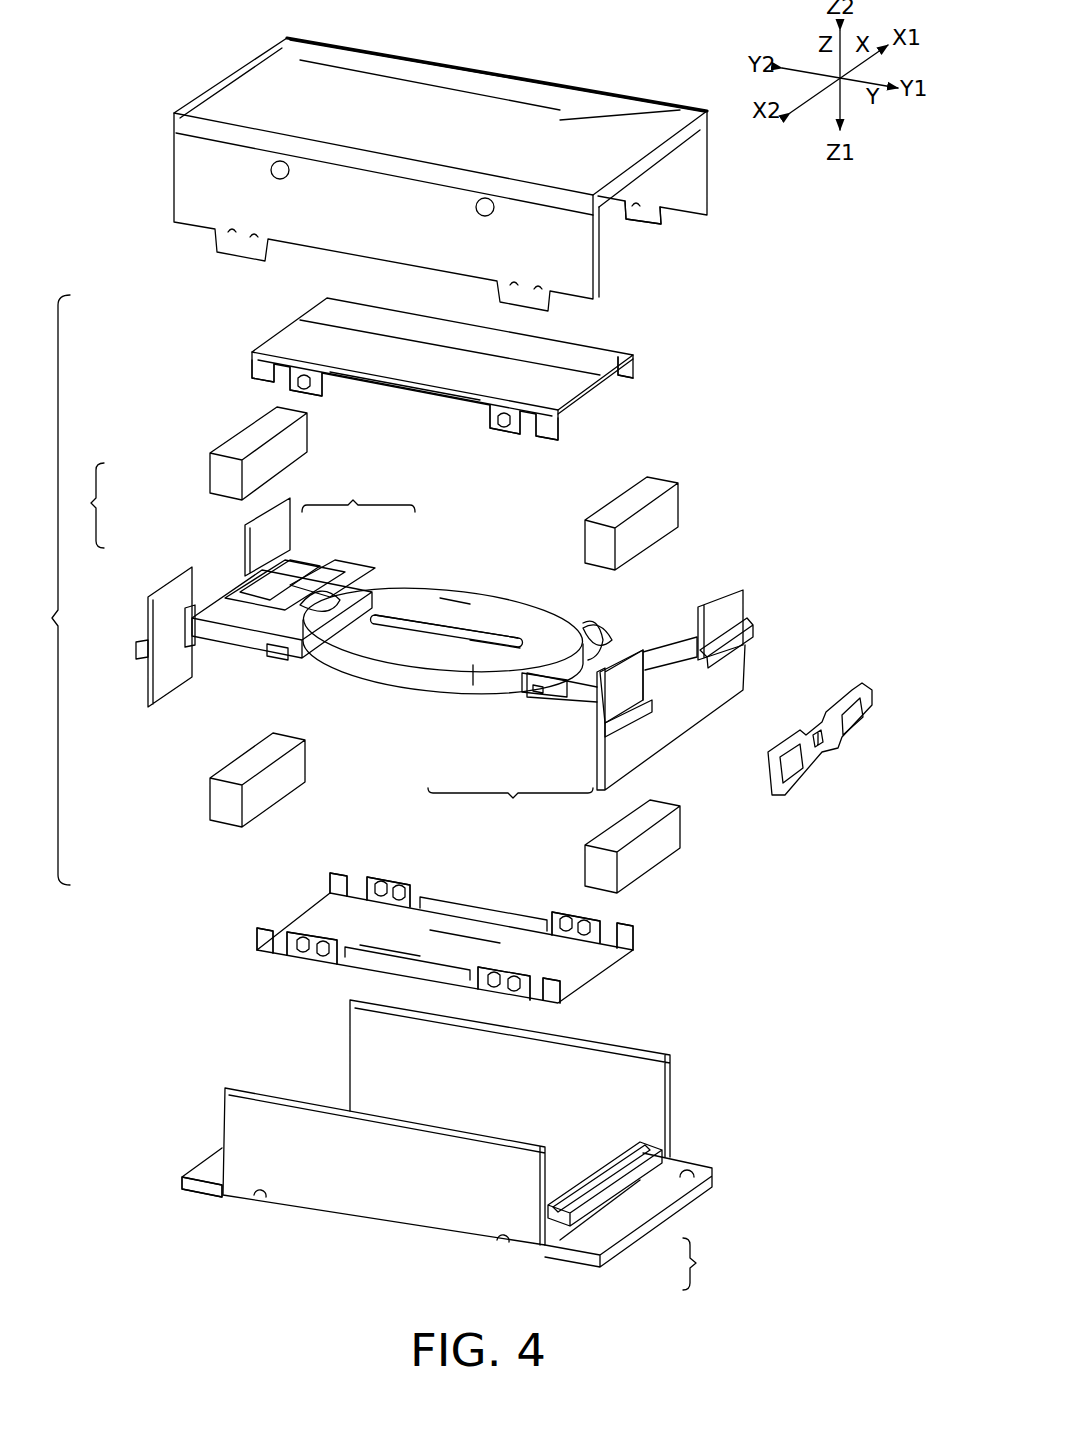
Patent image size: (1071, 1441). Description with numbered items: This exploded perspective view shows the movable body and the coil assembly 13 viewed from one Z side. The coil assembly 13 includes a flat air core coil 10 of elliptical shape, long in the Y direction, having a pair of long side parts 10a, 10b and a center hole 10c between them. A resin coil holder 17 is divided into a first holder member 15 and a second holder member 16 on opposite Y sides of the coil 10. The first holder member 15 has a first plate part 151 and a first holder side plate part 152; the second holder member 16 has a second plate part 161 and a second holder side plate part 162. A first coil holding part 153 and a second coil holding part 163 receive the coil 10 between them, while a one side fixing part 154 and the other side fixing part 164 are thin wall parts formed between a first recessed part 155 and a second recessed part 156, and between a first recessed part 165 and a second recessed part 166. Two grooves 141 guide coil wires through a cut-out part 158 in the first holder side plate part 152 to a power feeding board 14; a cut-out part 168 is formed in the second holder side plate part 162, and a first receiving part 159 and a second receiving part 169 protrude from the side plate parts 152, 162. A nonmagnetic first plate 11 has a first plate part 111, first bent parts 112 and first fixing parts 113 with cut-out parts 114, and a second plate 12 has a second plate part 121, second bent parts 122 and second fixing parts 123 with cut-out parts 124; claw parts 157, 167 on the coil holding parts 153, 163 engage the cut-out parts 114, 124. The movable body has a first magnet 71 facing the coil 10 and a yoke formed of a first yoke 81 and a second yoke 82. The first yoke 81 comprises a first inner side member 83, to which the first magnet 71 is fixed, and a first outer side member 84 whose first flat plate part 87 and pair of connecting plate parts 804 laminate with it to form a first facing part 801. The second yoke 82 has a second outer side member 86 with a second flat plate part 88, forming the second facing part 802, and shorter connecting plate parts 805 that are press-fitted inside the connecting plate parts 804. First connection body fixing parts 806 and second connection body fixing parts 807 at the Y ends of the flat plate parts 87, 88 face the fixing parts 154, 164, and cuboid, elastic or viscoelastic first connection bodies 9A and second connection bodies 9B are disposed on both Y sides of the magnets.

The first connection body 9A is at (222, 798).
The second connection body 9B is at (712, 470).
The coil 10 is at (395, 706).
The long side part 10a is at (453, 606).
The long side part 10b is at (414, 640).
The center hole 10c is at (494, 634).
The first plate 11 is at (210, 910).
The second plate 12 is at (238, 345).
The coil assembly 13 is at (45, 590).
The power feeding board 14 is at (822, 748).
The first holder member 15 is at (460, 478).
The second holder member 16 is at (364, 593).
The coil holder 17 is at (81, 505).
The first magnet 71 is at (585, 1162).
The first yoke 81 is at (442, 1142).
The second yoke 82 is at (240, 80).
The first inner side member 83 is at (600, 1193).
The first outer side member 84 is at (395, 1240).
The second outer side member 86 is at (494, 70).
The first flat plate part 87 is at (600, 1232).
The second flat plate part 88 is at (420, 98).
The first plate part 111 is at (470, 936).
The first bent parts 112 is at (404, 958).
The first fixing parts 113 is at (380, 888).
The cut-out parts 114 is at (347, 878).
The second plate part 121 is at (345, 322).
The second bent parts 122 is at (405, 392).
The second fixing parts 123 is at (310, 388).
The cut-out parts 124 is at (262, 376).
The grooves 141 is at (300, 608).
The first plate part 151 is at (615, 694).
The first holder side plate part 152 is at (742, 598).
The first coil holding part 153 is at (540, 684).
The one side fixing part 154 is at (590, 690).
The first recessed part 155 is at (597, 672).
The second recessed part 156 is at (536, 696).
The claw part 157 is at (524, 690).
The cut-out part 158 is at (699, 626).
The first receiving part 159 is at (633, 717).
The second plate part 161 is at (358, 493).
The second holder side plate part 162 is at (172, 675).
The second coil holding part 163 is at (340, 584).
The other side fixing part 164 is at (284, 580).
The first recessed part 165 is at (235, 652).
The second recessed part 166 is at (236, 640).
The claw part 167 is at (284, 660).
The cut-out part 168 is at (248, 540).
The second receiving part 169 is at (244, 566).
The first facing part 801 is at (431, 1218).
The second facing part 802 is at (556, 102).
The connecting plate parts 804 is at (455, 1127).
The connecting plate parts 805 is at (645, 228).
The first connection body fixing parts 806 is at (215, 1190).
The second connection body fixing parts 807 is at (220, 96).